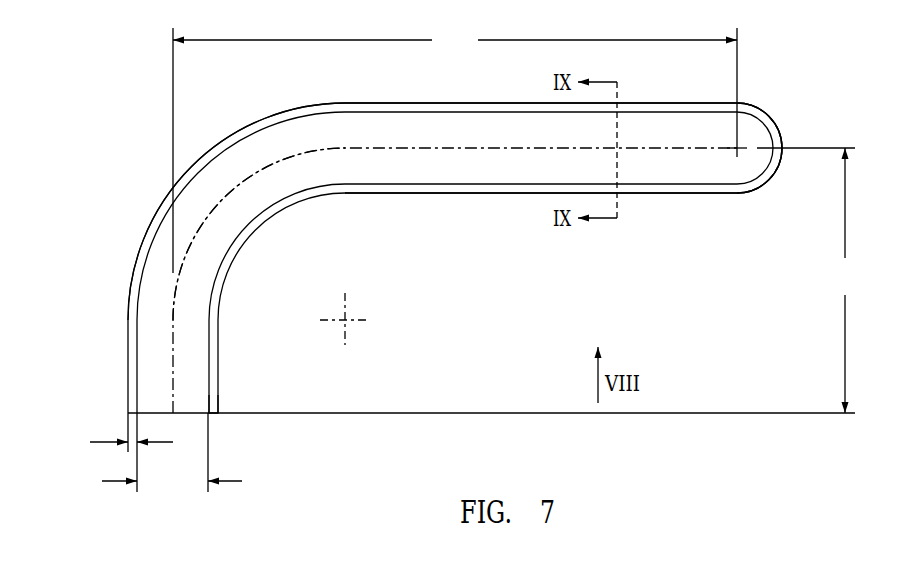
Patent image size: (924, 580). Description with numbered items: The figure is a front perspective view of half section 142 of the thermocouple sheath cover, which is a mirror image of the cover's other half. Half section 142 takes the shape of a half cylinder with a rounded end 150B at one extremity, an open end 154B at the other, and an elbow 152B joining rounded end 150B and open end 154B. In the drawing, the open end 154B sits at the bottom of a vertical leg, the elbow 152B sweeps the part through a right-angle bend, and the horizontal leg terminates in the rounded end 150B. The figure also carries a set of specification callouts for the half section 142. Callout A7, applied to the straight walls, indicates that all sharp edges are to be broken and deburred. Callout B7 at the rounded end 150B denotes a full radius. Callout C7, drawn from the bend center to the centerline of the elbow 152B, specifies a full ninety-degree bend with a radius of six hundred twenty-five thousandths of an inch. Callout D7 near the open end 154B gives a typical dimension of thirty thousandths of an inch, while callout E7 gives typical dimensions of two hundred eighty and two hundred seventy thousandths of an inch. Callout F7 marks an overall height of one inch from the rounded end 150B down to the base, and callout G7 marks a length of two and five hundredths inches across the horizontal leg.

The half section 142 is at (95, 197).
The elbow 152B is at (235, 135).
The rounded end 150B is at (777, 138).
The open end 154B is at (218, 397).
The edge finish characteristic A7 is at (460, 102).
The full radius characteristic B7 is at (769, 116).
The elbow bend radius characteristic C7 is at (223, 198).
The wall thickness characteristic D7 is at (120, 452).
The width characteristic E7 is at (186, 454).
The height characteristic F7 is at (807, 280).
The length characteristic G7 is at (455, 151).